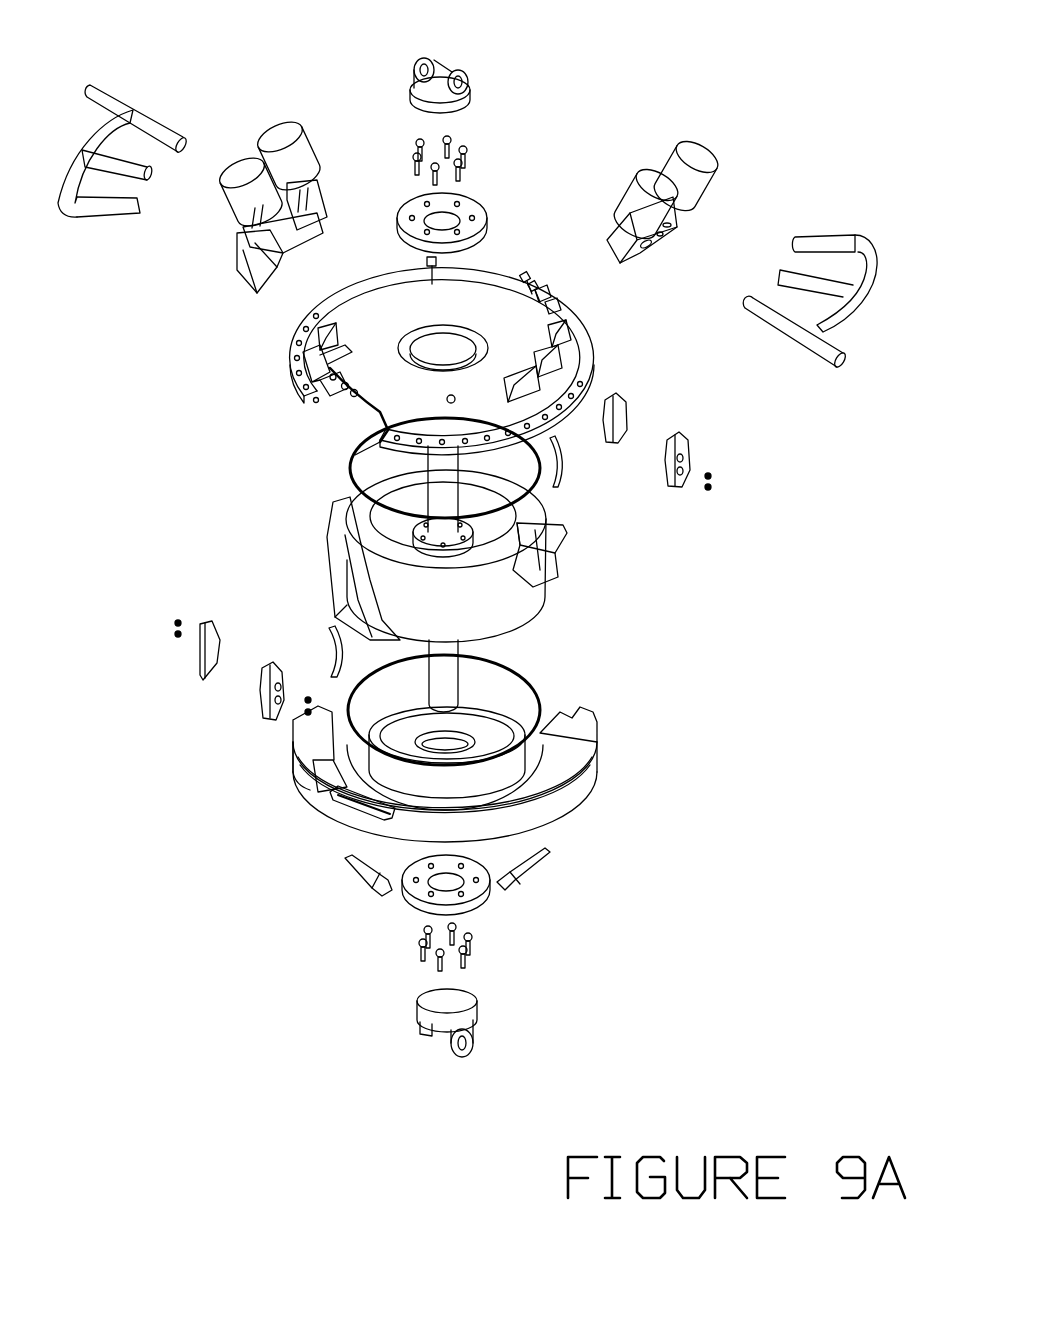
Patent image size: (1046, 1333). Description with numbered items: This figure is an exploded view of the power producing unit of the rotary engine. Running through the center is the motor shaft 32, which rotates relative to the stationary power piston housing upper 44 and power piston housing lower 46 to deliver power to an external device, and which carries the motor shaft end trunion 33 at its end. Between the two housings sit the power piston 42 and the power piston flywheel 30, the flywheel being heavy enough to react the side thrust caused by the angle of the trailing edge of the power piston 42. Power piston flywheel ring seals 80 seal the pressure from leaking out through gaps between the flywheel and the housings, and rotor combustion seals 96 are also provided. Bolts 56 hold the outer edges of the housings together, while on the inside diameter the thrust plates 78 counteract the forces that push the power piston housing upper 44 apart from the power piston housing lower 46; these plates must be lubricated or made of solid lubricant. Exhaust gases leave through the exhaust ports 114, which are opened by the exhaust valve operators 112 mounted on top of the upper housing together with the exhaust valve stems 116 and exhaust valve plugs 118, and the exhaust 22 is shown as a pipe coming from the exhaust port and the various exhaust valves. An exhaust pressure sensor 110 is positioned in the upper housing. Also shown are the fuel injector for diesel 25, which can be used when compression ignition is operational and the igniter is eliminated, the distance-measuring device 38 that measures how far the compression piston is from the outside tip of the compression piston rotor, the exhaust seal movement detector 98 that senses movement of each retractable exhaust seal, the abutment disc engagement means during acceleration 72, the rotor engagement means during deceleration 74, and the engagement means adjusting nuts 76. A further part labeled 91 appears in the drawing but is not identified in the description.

The exhaust 22 is at (487, 184).
The fuel injector for diesel 25 is at (428, 887).
The power piston flywheel 30 is at (517, 556).
The motor shaft 32 is at (427, 579).
The motor shaft end trunion 33 is at (519, 544).
The distance-measuring device 38 is at (425, 370).
The power piston 42 is at (430, 568).
The power piston housing upper 44 is at (442, 346).
The power piston housing lower 46 is at (340, 787).
The bolts 56 is at (463, 153).
The abutment disc engagement means during acceleration 72 is at (436, 552).
The rotor engagement means during deceleration 74 is at (411, 576).
The engagement means adjusting nuts 76 is at (177, 634).
The thrust plates 78 is at (425, 553).
The power piston flywheel ring seals 80 is at (430, 591).
The tab 91 is at (251, 848).
The rotor combustion seals 96 is at (364, 584).
The exhaust seal movement detector 98 is at (517, 232).
The exhaust pressure sensor 110 is at (393, 332).
The exhaust valve operators 112 is at (282, 138).
The exhaust ports 114 is at (580, 352).
The exhaust valve stems 116 is at (388, 108).
The exhaust valve plugs 118 is at (318, 236).